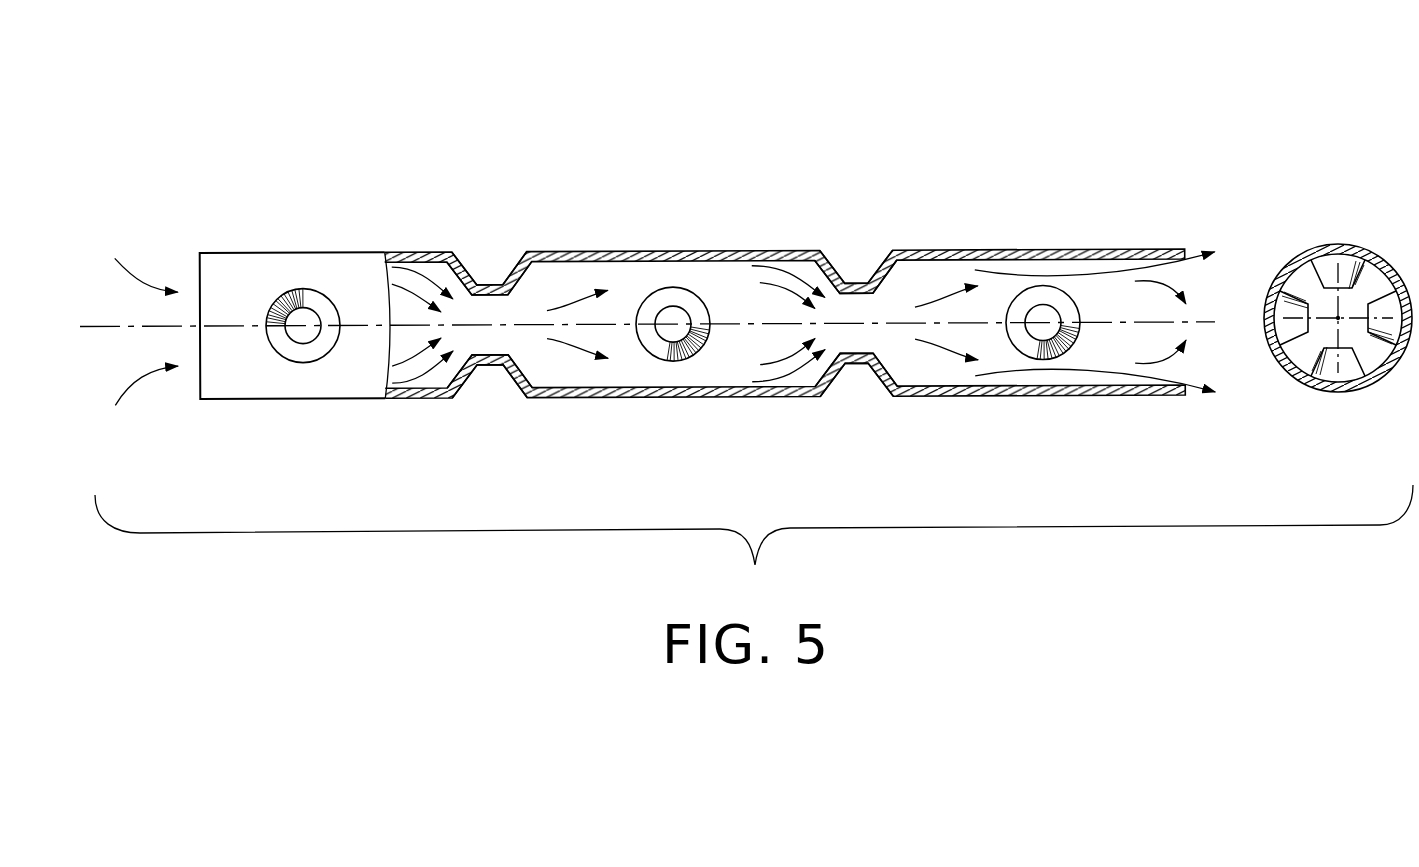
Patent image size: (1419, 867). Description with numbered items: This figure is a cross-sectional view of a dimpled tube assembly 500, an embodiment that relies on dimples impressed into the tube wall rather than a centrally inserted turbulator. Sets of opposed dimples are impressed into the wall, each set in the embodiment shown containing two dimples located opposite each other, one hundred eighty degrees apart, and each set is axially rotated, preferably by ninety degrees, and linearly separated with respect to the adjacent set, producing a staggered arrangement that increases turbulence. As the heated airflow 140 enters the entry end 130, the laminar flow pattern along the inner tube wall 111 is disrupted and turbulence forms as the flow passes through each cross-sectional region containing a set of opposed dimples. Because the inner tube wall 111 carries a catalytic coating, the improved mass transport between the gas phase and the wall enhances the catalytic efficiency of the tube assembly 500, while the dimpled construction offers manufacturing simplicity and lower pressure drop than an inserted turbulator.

The tube assembly 500 is at (933, 80).
The heated airflow 140 is at (136, 306).
The entry end 130 is at (253, 400).
The inner tube wall 111 is at (577, 372).